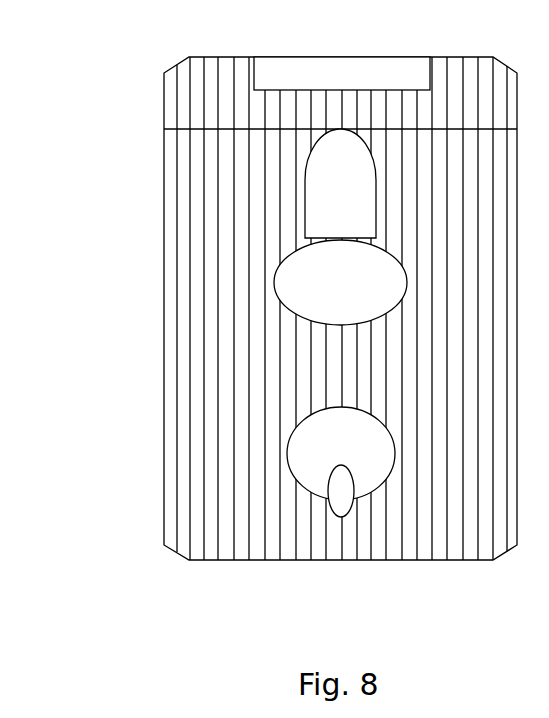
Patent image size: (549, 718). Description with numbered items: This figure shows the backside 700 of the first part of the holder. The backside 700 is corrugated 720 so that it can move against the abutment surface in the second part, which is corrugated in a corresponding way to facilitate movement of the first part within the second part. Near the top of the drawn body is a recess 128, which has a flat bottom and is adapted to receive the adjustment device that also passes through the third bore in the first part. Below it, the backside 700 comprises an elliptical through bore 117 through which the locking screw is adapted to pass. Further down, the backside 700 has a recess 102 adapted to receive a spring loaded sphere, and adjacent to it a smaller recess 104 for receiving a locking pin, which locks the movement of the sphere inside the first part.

The backside 700 is at (118, 165).
The corrugation 720 is at (190, 252).
The recess 128 is at (270, 69).
The elliptical through bore 117 is at (302, 300).
The recess 102 is at (293, 461).
The recess 104 is at (340, 497).